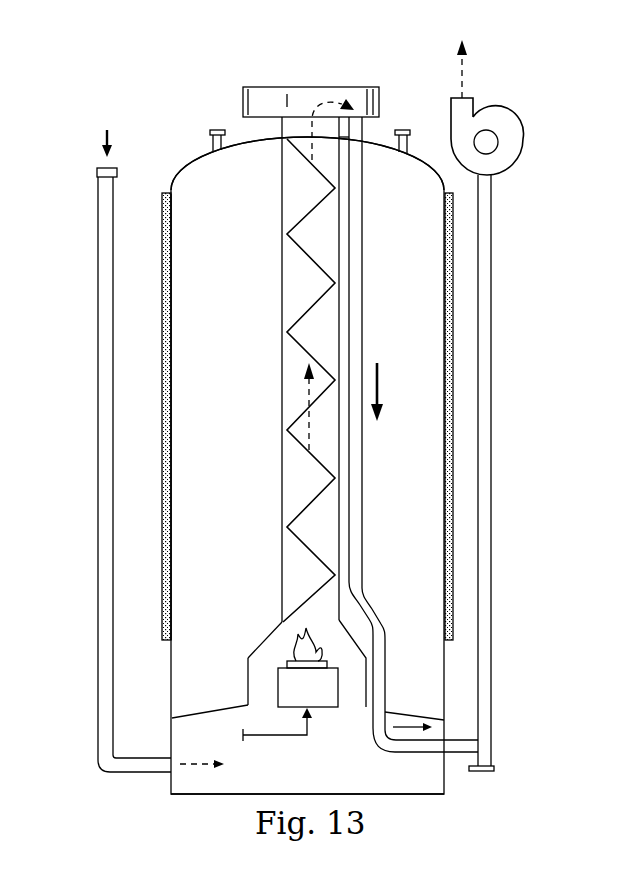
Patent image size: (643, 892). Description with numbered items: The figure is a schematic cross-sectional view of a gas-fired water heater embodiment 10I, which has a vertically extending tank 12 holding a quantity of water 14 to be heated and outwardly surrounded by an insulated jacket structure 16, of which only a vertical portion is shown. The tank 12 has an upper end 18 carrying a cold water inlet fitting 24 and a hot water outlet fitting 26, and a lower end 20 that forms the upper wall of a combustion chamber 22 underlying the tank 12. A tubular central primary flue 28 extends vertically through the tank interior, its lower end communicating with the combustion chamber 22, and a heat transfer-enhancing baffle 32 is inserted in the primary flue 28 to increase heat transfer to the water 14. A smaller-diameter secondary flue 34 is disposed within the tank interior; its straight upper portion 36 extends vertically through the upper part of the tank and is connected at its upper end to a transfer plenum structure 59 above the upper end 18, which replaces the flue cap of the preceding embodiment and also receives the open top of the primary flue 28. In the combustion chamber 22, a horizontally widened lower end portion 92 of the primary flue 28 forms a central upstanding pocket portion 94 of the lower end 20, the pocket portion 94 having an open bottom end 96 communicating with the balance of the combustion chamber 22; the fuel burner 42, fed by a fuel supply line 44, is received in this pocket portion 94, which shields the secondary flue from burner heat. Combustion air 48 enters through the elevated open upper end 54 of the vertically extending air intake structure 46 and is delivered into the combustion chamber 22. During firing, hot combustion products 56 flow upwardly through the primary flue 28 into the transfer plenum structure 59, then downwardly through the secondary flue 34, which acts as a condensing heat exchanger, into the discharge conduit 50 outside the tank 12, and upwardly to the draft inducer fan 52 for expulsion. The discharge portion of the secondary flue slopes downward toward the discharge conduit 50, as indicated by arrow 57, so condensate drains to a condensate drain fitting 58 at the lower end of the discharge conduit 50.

The water heater embodiment 10I is at (199, 96).
The tank 12 is at (169, 664).
The water 14 is at (212, 523).
The insulated jacket structure 16 is at (162, 482).
The upper end 18 is at (200, 152).
The lower end 20 is at (172, 722).
The combustion chamber 22 is at (402, 786).
The cold water inlet fitting 24 is at (212, 142).
The hot water outlet fitting 26 is at (403, 128).
The primary flue 28 is at (283, 278).
The heat transfer-enhancing baffle 32 is at (308, 210).
The secondary flue 34 is at (363, 507).
The upper portion of secondary flue 36 is at (363, 290).
The fuel burner 42 is at (292, 700).
The fuel supply line 44 is at (273, 740).
The air intake structure 46 is at (140, 775).
The combustion air 48 is at (107, 125).
The discharge conduit 50 is at (494, 431).
The draft inducer fan 52 is at (523, 141).
The open upper end 54 is at (96, 175).
The combustion products 56 is at (306, 390).
The arrow 57 is at (408, 717).
The condensate drain fitting 58 is at (487, 772).
The transfer plenum structure 59 is at (283, 86).
The widened lower end portion 92 is at (248, 688).
The pocket portion 94 is at (273, 650).
The open bottom end 96 is at (352, 705).